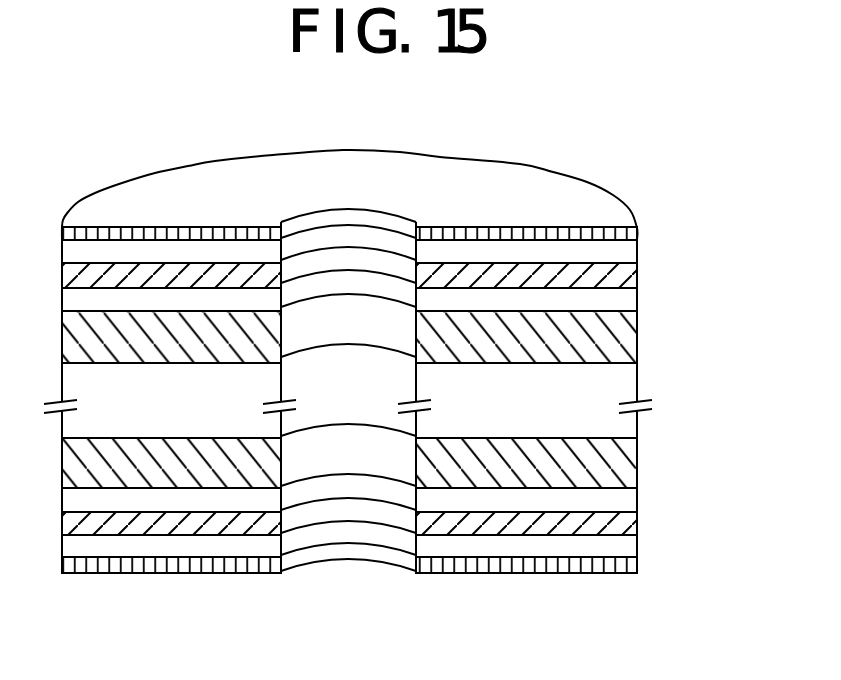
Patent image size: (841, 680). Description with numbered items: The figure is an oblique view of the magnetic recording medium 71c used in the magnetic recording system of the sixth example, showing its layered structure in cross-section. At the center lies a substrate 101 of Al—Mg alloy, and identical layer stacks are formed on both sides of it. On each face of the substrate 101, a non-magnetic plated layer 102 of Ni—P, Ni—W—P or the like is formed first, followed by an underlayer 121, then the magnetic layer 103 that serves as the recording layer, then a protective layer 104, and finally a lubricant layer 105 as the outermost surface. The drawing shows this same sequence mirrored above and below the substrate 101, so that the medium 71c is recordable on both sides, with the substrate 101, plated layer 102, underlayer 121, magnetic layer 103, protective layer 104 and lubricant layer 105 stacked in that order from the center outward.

The magnetic recording medium 71c is at (632, 113).
The substrate 101 is at (632, 381).
The non-magnetic plated layer 102 is at (632, 331).
The magnetic layer 103 is at (634, 268).
The protective layer 104 is at (628, 248).
The lubricant layer 105 is at (634, 229).
The underlayer 121 is at (632, 294).